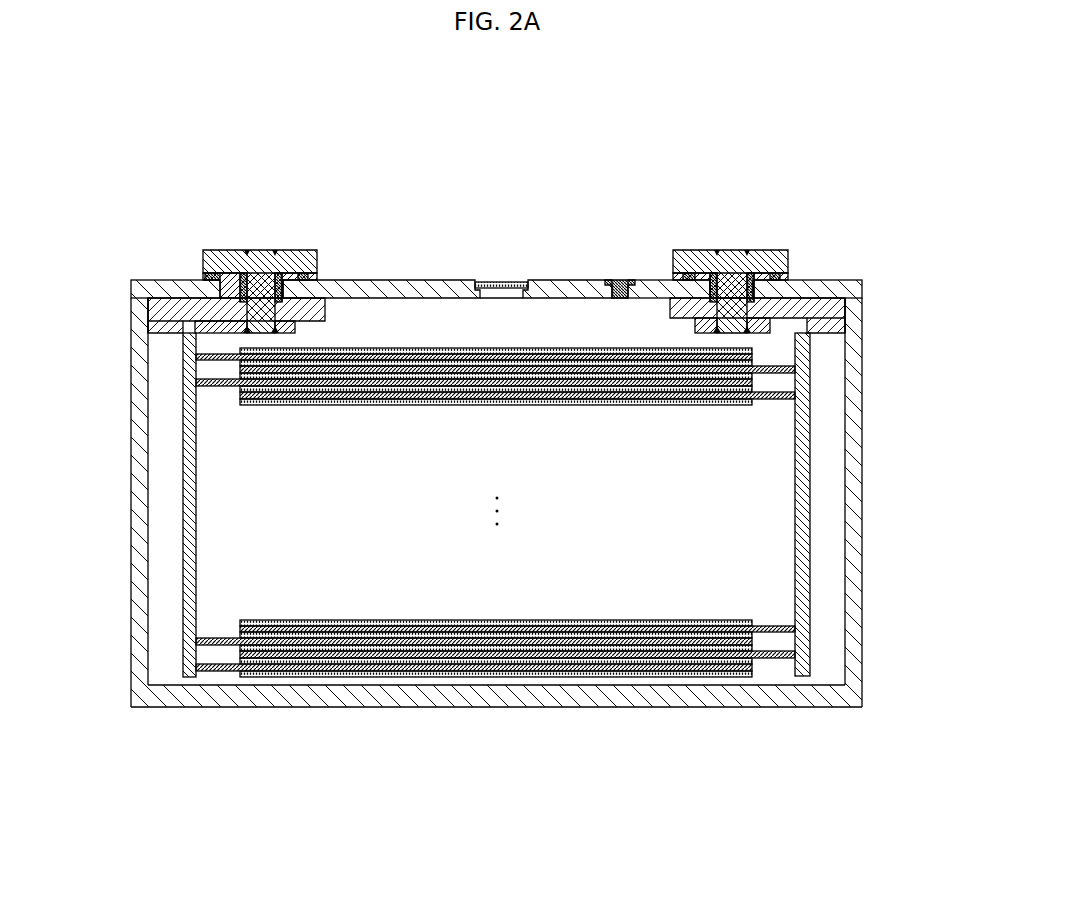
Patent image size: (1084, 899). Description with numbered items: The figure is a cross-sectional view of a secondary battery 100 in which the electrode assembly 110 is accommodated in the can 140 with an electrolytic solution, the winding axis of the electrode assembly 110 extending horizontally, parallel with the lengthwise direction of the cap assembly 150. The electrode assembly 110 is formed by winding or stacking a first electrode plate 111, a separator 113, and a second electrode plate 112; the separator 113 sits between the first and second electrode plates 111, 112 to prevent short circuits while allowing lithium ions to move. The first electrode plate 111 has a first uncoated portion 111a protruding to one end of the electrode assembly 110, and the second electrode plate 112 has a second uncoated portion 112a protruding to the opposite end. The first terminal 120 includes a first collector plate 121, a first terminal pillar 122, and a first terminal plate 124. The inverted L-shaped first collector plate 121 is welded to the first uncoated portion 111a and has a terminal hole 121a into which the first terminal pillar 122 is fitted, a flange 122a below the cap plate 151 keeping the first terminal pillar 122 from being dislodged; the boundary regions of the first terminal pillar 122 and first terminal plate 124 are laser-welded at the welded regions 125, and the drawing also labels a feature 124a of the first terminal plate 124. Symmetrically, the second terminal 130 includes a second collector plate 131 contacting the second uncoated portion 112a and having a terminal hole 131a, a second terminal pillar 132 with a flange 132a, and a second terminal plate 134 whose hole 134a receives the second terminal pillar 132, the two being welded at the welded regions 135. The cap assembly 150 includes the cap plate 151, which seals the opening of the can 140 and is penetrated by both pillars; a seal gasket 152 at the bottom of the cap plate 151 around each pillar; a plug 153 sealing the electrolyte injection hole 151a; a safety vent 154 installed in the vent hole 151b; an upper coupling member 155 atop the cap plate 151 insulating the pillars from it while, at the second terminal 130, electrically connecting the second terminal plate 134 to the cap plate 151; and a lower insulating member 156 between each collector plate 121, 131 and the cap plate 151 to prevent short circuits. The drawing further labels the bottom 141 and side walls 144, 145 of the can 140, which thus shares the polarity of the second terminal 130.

The secondary battery 100 is at (895, 117).
The electrode assembly 110 is at (496, 550).
The first electrode plate 111 is at (313, 677).
The first uncoated portion 111a is at (220, 670).
The second electrode plate 112 is at (673, 670).
The second uncoated portion 112a is at (780, 668).
The separator 113 is at (512, 677).
The first terminal 120 is at (225, 247).
The first collector plate 121 is at (158, 305).
The terminal hole 121a is at (131, 342).
The first terminal pillar 122 is at (325, 277).
The flange 122a is at (322, 318).
The first terminal plate 124 is at (228, 262).
The first terminal plate 124a is at (300, 262).
The welded regions 125 is at (275, 250).
The second terminal 130 is at (782, 249).
The second collector plate 131 is at (812, 307).
The terminal hole 131a is at (782, 345).
The second terminal pillar 132 is at (790, 305).
The flange 132a is at (678, 318).
The second terminal plate 134 is at (708, 262).
The hole 134a is at (740, 262).
The welded regions 135 is at (731, 255).
The can 140 is at (885, 428).
The case bottom 141 is at (408, 705).
The case side wall 144 is at (862, 540).
The case side wall 145 is at (131, 540).
The cap assembly 150 is at (497, 234).
The cap plate 151 is at (398, 280).
The electrolyte injection hole 151a is at (617, 299).
The vent hole 151b is at (497, 298).
The seal gasket 152 is at (212, 276).
The plug 153 is at (615, 282).
The safety vent 154 is at (500, 282).
The upper coupling member 155 is at (241, 285).
The lower insulating member 156 is at (157, 312).